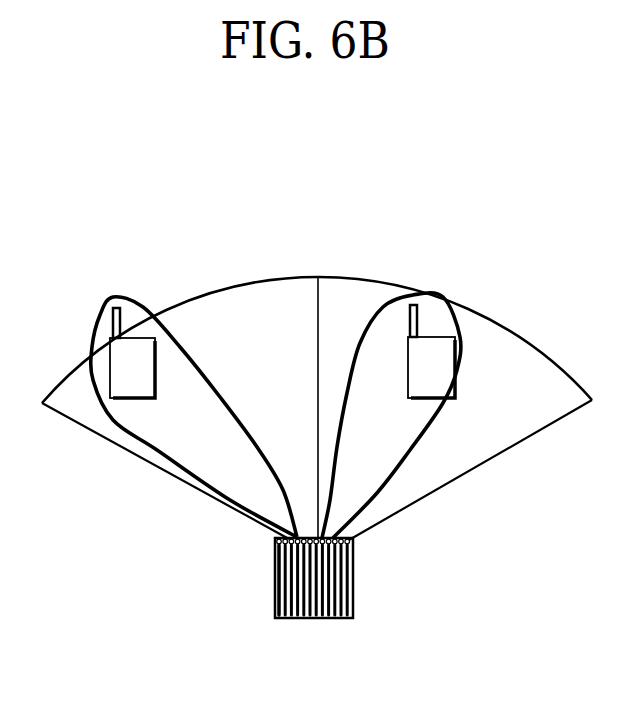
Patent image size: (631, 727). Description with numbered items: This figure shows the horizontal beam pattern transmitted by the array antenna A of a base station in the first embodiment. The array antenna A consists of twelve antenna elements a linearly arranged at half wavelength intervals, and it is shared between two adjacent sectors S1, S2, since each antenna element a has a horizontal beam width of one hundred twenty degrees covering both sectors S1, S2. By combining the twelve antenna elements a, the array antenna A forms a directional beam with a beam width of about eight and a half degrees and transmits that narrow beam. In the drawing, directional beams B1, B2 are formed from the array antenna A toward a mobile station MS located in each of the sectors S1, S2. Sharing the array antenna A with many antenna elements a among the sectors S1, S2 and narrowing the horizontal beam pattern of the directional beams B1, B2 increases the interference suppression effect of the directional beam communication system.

The sector S1 is at (72, 388).
The sector S2 is at (528, 353).
The first beam B1 is at (150, 448).
The second beam B2 is at (405, 470).
The array antenna A is at (328, 620).
The antenna element a is at (280, 618).
The mobile station MS is at (282, 351).